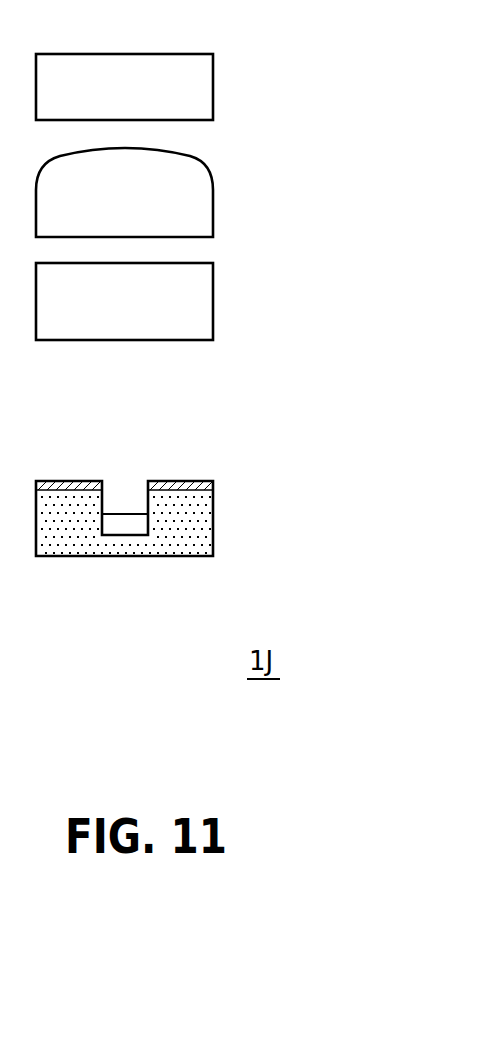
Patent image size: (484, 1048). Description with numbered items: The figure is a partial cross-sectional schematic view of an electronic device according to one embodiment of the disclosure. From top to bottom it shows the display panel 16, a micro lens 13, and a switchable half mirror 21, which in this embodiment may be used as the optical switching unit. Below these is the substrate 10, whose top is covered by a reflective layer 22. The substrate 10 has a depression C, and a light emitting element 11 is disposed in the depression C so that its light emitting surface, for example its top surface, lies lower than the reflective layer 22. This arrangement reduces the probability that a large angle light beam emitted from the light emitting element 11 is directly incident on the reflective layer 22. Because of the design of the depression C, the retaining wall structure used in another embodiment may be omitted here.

The display panel 16 is at (191, 88).
The micro lens 13 is at (191, 213).
The switchable half mirror 21 is at (191, 306).
The reflective layer 22 is at (190, 487).
The substrate 10 is at (191, 530).
The light emitting element 11 is at (123, 527).
The depression C is at (103, 498).